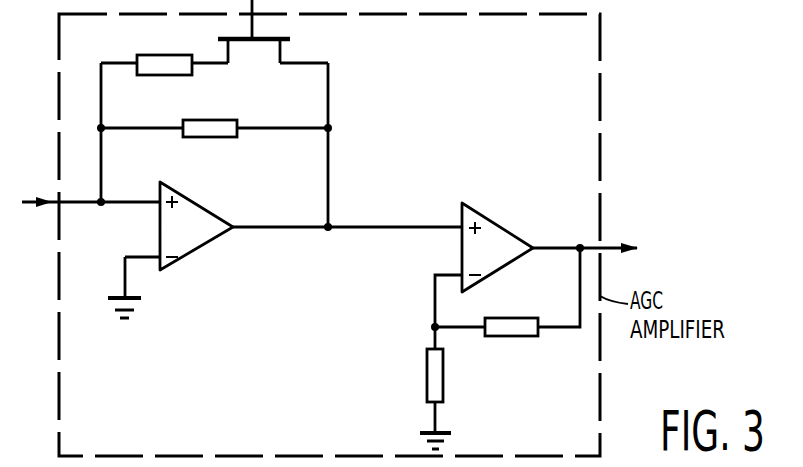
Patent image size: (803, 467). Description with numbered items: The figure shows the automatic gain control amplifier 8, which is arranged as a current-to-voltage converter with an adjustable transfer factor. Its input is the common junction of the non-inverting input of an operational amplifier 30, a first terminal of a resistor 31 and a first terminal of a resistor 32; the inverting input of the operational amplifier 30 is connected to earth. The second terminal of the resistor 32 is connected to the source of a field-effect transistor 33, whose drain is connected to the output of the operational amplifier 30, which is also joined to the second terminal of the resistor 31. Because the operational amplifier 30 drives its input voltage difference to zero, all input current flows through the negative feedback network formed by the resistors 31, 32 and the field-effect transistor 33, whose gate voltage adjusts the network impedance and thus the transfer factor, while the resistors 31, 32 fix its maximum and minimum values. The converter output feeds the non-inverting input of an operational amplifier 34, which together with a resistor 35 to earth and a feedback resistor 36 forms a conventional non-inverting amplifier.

The automatic gain control amplifier 8 is at (600, 83).
The operational amplifier 30 is at (198, 217).
The resistor 31 is at (202, 121).
The resistor 32 is at (158, 56).
The field-effect transistor 33 is at (271, 37).
The operational amplifier 34 is at (494, 243).
The resistor 35 is at (443, 377).
The resistor 36 is at (513, 336).